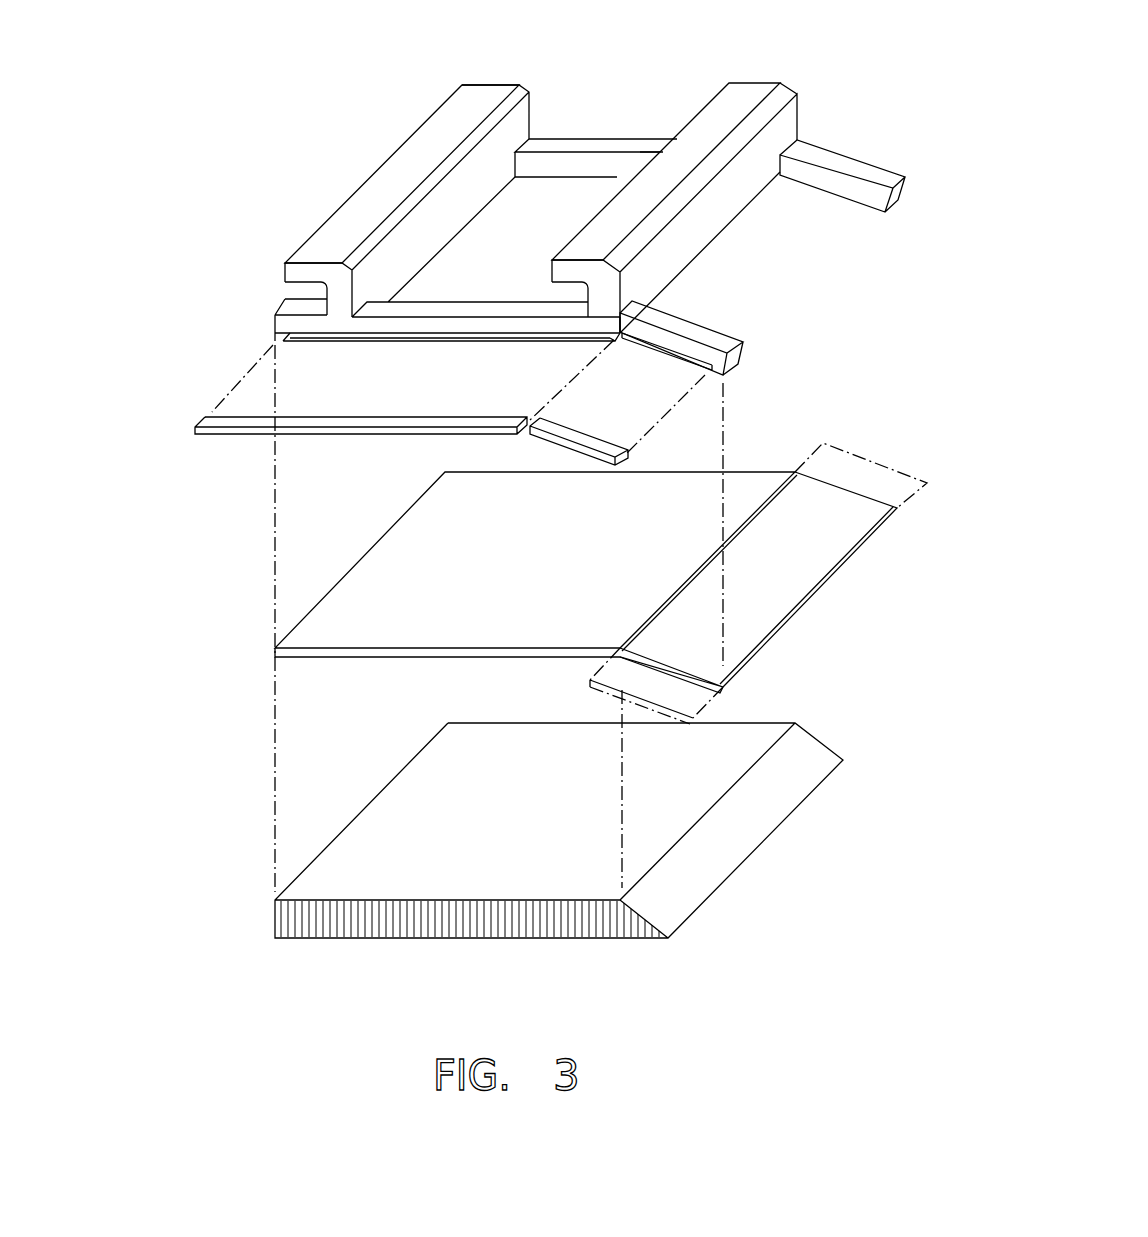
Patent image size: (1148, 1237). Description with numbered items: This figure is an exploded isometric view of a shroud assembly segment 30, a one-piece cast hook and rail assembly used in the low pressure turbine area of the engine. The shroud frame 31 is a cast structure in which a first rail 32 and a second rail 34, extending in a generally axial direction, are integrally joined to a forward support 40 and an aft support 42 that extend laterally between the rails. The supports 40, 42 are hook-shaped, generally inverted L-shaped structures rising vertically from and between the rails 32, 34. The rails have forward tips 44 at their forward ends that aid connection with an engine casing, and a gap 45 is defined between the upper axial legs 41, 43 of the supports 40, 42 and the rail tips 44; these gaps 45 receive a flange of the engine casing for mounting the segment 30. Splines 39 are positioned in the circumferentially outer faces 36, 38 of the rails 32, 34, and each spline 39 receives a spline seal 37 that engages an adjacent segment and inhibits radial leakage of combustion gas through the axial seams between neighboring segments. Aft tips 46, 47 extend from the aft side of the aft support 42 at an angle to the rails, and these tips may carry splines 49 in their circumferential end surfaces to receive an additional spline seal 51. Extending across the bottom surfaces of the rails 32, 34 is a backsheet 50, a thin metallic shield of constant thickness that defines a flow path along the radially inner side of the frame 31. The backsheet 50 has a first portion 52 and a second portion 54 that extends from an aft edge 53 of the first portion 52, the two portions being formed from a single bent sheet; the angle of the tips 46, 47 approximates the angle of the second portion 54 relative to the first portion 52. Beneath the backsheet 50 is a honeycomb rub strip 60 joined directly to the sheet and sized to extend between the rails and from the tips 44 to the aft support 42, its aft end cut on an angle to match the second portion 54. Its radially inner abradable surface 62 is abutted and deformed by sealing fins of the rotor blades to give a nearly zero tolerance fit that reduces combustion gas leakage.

The shroud assembly segment 30 is at (197, 248).
The frame 31 is at (340, 180).
The first rail 32 is at (419, 306).
The second rail 34 is at (548, 145).
The circumferentially outer face 36 is at (476, 325).
The spline seal 37 is at (468, 428).
The circumferentially outer face 38 is at (656, 130).
The spline 39 is at (430, 334).
The forward support 40 is at (412, 150).
The upper axial leg 41 is at (487, 88).
The aft support 42 is at (752, 88).
The upper axial leg 43 is at (737, 100).
The forward tip 44 is at (265, 333).
The gap 45 is at (548, 282).
The aft tip 46 is at (708, 298).
The aft tip 47 is at (824, 134).
The spline 49 is at (666, 354).
The backsheet 50 is at (622, 494).
The spline seal 51 is at (567, 438).
The first portion 52 is at (415, 560).
The aft edge 53 is at (796, 468).
The second portion 54 is at (780, 570).
The honeycomb rub strip 60 is at (430, 803).
The abradable surface 62 is at (375, 930).